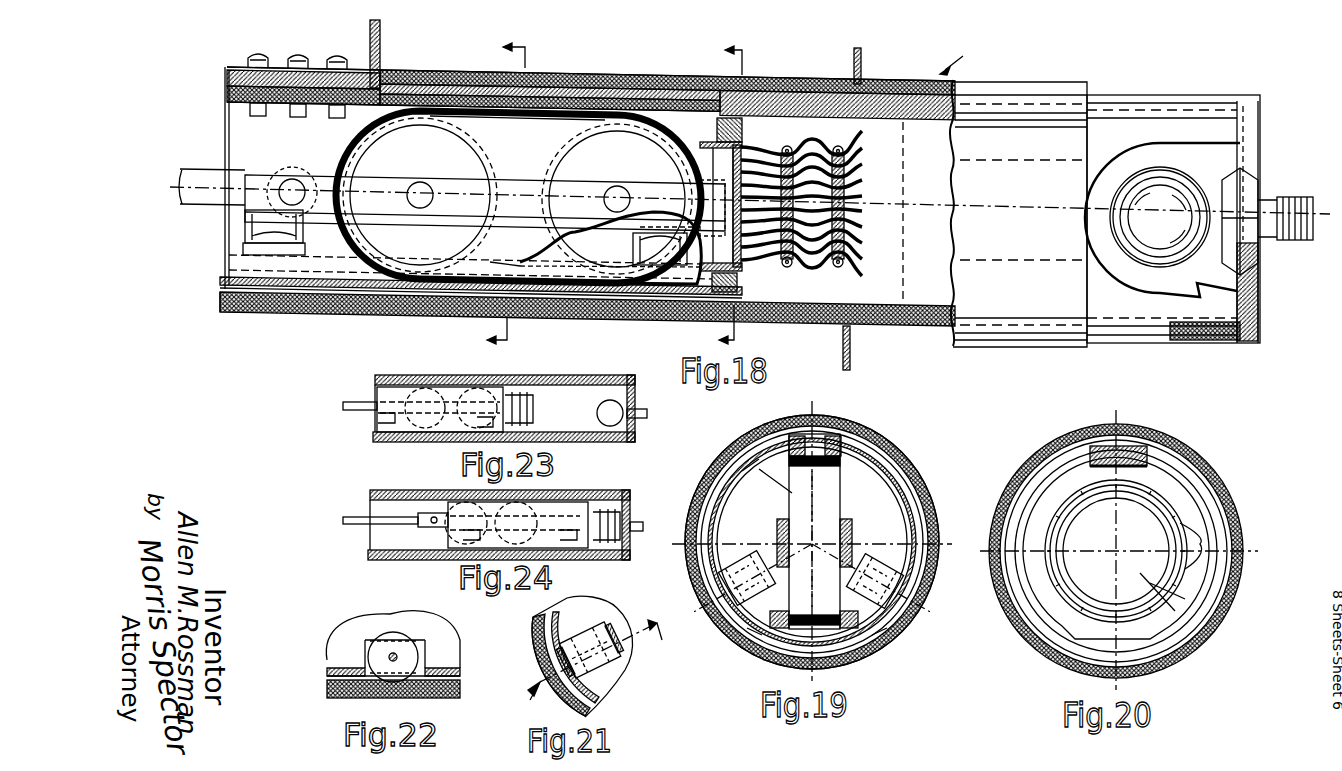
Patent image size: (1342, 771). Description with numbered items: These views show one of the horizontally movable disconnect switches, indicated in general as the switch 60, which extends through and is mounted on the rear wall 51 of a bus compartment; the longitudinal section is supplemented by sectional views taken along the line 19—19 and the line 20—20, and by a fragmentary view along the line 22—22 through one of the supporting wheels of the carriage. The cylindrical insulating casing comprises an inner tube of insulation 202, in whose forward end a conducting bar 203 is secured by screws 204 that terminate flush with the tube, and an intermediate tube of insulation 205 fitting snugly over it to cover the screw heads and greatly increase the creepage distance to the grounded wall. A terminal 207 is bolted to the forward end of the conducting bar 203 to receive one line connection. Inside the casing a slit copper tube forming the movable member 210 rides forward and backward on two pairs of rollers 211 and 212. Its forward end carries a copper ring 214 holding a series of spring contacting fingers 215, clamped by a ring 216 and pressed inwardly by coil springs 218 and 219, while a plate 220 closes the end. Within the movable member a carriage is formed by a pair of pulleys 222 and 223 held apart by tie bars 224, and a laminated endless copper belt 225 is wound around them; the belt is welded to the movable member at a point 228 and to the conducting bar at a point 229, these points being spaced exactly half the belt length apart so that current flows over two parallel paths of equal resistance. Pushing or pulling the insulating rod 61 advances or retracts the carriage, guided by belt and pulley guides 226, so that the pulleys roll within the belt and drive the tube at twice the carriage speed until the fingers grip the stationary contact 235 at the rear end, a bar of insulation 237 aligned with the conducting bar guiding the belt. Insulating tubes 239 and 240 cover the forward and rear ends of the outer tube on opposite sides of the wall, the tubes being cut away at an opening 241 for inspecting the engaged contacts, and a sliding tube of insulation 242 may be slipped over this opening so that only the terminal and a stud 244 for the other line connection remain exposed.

In FIG. 18, the section line 19— 19 is at (492, 193).
In FIG. 18, the section line 20— 20 is at (712, 195).
In FIG. 21, the section line 22— 22 is at (582, 646).
In FIG. 18, the rear wall 51 is at (853, 62).
In FIG. 18, the disconnect switch 60 is at (964, 53).
In FIG. 23, the disconnect switch 60 is at (395, 368).
In FIG. 24, the disconnect switch 60 is at (385, 482).
In FIG. 18, the insulating rod 61 is at (210, 176).
In FIG. 23, the insulating rod 61 is at (343, 407).
In FIG. 24, the insulating rod 61 is at (395, 520).
In FIG. 18, the inner tube of insulation 202 is at (818, 320).
In FIG. 19, the inner tube of insulation 202 is at (838, 470).
In FIG. 20, the inner tube of insulation 202 is at (1116, 551).
In FIG. 22, the inner tube of insulation 202 is at (327, 672).
In FIG. 21, the inner tube of insulation 202 is at (548, 611).
In FIG. 18, the conducting bar 203 is at (364, 108).
In FIG. 19, the conducting bar 203 is at (832, 428).
In FIG. 18, the screws 204 is at (860, 430).
In FIG. 19, the screws 204 is at (856, 430).
In FIG. 18, the intermediate tube of insulation 205 is at (545, 322).
In FIG. 19, the intermediate tube of insulation 205 is at (893, 457).
In FIG. 22, the intermediate tube of insulation 205 is at (327, 688).
In FIG. 18, the terminal 207 is at (368, 33).
In FIG. 18, the movable member 210 is at (222, 281).
In FIG. 19, the movable member 210 is at (910, 487).
In FIG. 20, the movable member 210 is at (1202, 505).
In FIG. 23, the movable member 210 is at (378, 428).
In FIG. 24, the movable member 210 is at (568, 508).
In FIG. 22, the movable member 210 is at (340, 660).
In FIG. 21, the movable member 210 is at (608, 696).
In FIG. 18, the rollers 211 is at (244, 229).
In FIG. 19, the rollers 211 is at (752, 560).
In FIG. 22, the rollers 211 is at (386, 640).
In FIG. 21, the rollers 211 is at (618, 665).
In FIG. 18, the rollers 212 is at (630, 268).
In FIG. 18, the copper ring 214 is at (742, 283).
In FIG. 20, the copper ring 214 is at (1178, 493).
In FIG. 18, the spring contacting fingers 215 is at (798, 167).
In FIG. 20, the spring contacting fingers 215 is at (1202, 539).
In FIG. 18, the clamping ring 216 is at (716, 136).
In FIG. 20, the clamping ring 216 is at (1186, 579).
In FIG. 18, the coil spring 218 is at (790, 140).
In FIG. 18, the coil spring 219 is at (900, 98).
In FIG. 18, the plate 220 is at (755, 140).
In FIG. 20, the plate 220 is at (1185, 601).
In FIG. 18, the pulley 222 is at (478, 145).
In FIG. 19, the pulley 222 is at (758, 462).
In FIG. 24, the pulley 222 is at (456, 508).
In FIG. 18, the pulley 223 is at (577, 157).
In FIG. 18, the tie bars 224 is at (398, 178).
In FIG. 19, the tie bars 224 is at (845, 510).
In FIG. 18, the laminated endless copper belt 225 is at (490, 268).
In FIG. 19, the belt and pulley guides 226 is at (752, 637).
In FIG. 18, the weld point 228 is at (434, 290).
In FIG. 18, the weld point 229 is at (642, 103).
In FIG. 18, the stationary contact 235 is at (1177, 168).
In FIG. 18, the bar of insulation 237 is at (947, 125).
In FIG. 20, the bar of insulation 237 is at (1135, 431).
In FIG. 18, the insulating tube 239 is at (825, 325).
In FIG. 19, the insulating tube 239 is at (920, 510).
In FIG. 20, the insulating tube 239 is at (1116, 551).
In FIG. 22, the insulating tube 239 is at (337, 698).
In FIG. 18, the insulating tube 240 is at (1182, 340).
In FIG. 18, the cut-away opening 241 is at (1235, 150).
In FIG. 18, the sliding tube of insulation 242 is at (1033, 107).
In FIG. 18, the stud 244 is at (1296, 200).